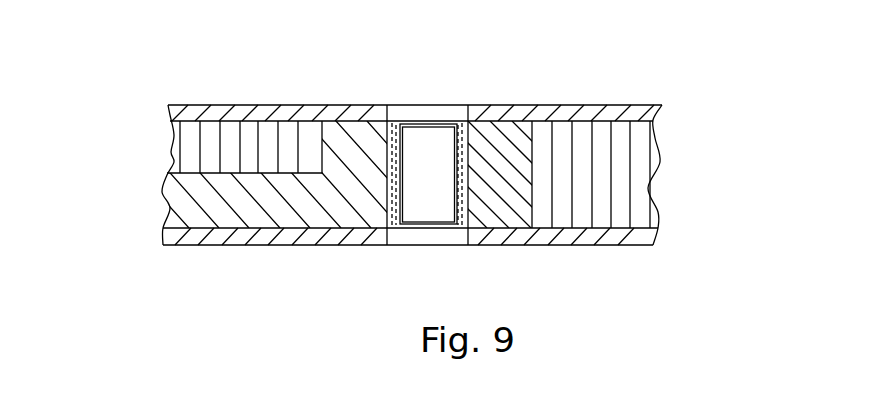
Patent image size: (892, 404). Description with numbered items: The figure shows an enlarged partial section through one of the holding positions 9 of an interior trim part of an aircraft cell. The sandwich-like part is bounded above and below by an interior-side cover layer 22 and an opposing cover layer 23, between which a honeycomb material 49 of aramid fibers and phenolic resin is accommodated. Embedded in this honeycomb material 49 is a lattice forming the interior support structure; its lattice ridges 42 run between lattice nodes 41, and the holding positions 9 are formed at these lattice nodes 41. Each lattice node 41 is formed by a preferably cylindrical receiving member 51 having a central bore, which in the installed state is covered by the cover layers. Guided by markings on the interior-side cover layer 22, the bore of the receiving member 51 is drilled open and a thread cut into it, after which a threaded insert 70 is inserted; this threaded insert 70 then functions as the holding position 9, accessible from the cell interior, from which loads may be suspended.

The cover layer 22 is at (352, 112).
The cover layer 23 is at (342, 235).
The lattice ridge 42 is at (223, 189).
The honeycomb material 49 is at (268, 145).
The holding position 9 is at (499, 160).
The threaded insert 70 is at (395, 133).
The lattice node 41 is at (455, 210).
The receiving member 51 is at (425, 197).